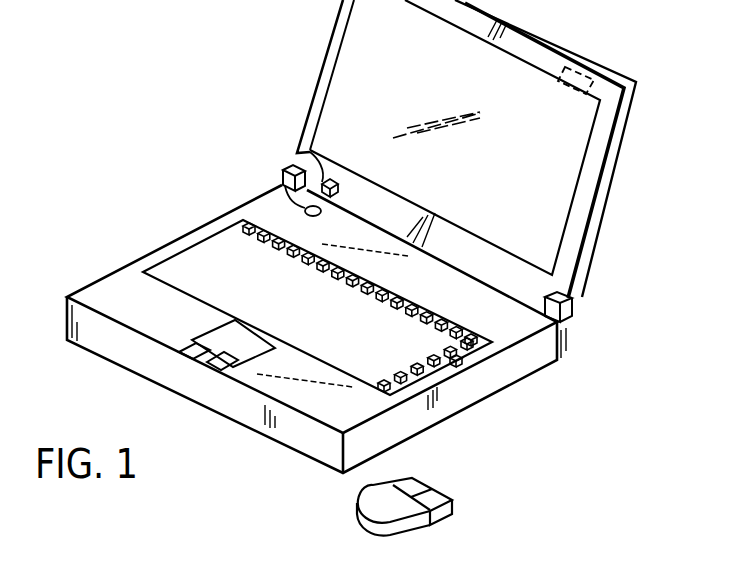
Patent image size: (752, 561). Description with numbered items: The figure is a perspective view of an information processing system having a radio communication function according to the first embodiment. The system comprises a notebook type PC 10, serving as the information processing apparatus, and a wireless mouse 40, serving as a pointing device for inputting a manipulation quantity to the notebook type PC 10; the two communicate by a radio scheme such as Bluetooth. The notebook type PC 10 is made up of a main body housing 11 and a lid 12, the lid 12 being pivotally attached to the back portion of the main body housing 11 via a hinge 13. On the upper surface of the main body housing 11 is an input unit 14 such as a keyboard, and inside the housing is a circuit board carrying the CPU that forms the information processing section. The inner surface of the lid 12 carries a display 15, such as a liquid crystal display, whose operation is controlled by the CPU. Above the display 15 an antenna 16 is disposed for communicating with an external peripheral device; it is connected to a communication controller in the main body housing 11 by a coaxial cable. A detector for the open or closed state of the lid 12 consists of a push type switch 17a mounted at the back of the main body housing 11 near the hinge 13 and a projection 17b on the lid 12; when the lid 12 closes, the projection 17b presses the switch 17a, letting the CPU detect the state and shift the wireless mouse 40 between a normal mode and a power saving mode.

The notebook type PC 10 is at (110, 260).
The main body housing 11 is at (404, 430).
The lid 12 is at (326, 48).
The hinge 13 is at (574, 314).
The input unit 14 is at (472, 366).
The display 15 is at (572, 181).
The antenna 16 is at (590, 60).
The push type switch 17a is at (283, 190).
The projection 17b is at (292, 165).
The wireless mouse 40 is at (437, 525).